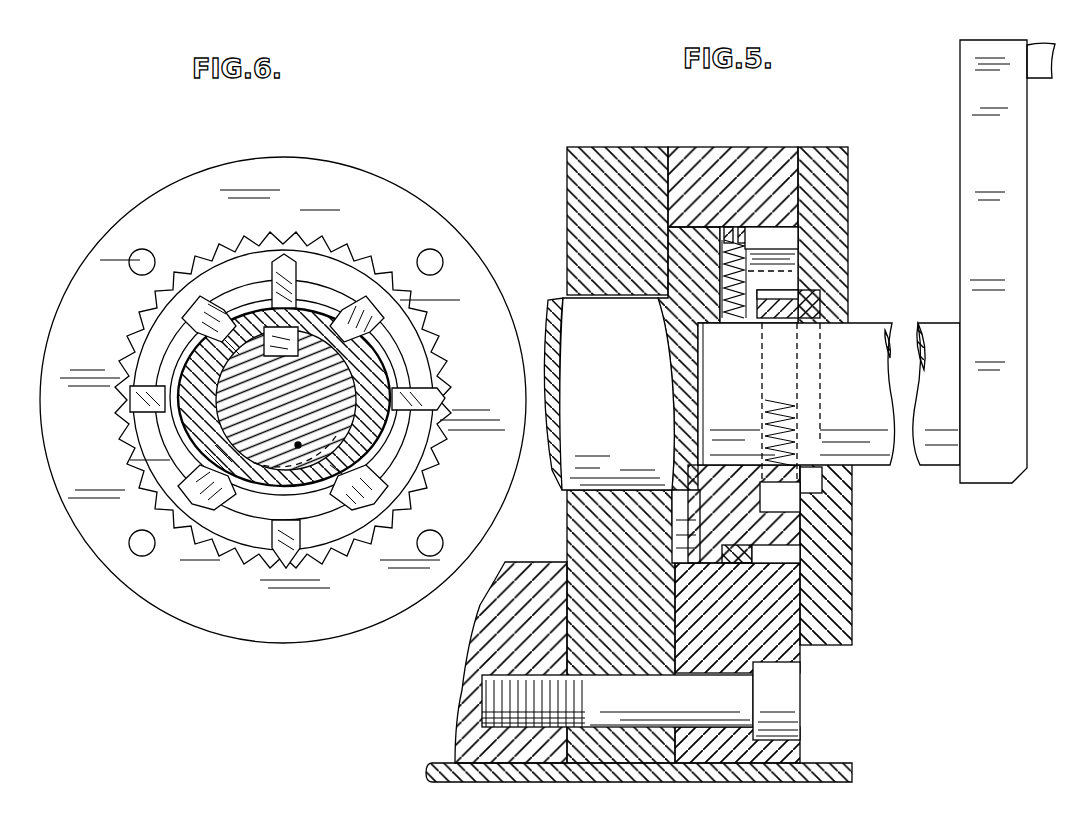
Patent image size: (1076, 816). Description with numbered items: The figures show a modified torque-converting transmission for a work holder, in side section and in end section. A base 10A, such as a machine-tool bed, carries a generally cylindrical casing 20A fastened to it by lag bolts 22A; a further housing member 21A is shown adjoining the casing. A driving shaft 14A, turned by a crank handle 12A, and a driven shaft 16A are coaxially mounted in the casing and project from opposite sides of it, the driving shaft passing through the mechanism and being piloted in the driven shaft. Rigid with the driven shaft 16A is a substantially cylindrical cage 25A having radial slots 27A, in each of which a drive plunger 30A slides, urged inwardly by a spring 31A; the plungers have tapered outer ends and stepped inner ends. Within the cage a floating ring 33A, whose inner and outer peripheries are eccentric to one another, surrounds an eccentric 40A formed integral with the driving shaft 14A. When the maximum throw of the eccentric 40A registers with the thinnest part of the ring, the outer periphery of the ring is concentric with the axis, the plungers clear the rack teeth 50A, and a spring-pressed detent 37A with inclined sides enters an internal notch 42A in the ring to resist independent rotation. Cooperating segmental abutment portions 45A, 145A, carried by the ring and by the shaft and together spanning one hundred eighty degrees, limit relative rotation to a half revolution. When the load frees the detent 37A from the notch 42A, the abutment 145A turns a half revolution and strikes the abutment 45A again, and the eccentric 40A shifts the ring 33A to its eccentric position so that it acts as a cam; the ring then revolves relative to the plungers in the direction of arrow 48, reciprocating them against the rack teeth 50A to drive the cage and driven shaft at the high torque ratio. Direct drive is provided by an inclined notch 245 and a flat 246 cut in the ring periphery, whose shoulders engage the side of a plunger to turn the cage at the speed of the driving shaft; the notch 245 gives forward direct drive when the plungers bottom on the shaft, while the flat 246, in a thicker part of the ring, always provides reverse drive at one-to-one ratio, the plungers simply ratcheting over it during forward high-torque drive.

In FIG. 5, the base 10A is at (850, 768).
In FIG. 5, the crank handle 12A is at (975, 72).
In FIG. 6, the driving shaft 14A is at (375, 375).
In FIG. 5, the driving shaft 14A is at (948, 332).
In FIG. 5, the driven shaft 16A is at (622, 430).
In FIG. 5, the casing 20A is at (608, 160).
In FIG. 5, the housing member 21A is at (700, 158).
In FIG. 5, the lag bolt 22A is at (790, 698).
In FIG. 6, the cage 25A is at (220, 285).
In FIG. 5, the cage 25A is at (815, 531).
In FIG. 6, the radial slot 27A is at (300, 335).
In FIG. 6, the drive plunger 30A is at (350, 300).
In FIG. 5, the drive plunger 30A is at (815, 290).
In FIG. 5, the spring 31A is at (745, 235).
In FIG. 6, the floating ring 33A is at (240, 500).
In FIG. 5, the floating ring 33A is at (805, 507).
In FIG. 6, the spring-pressed detent 37A is at (270, 330).
In FIG. 6, the eccentric 40A is at (318, 545).
In FIG. 6, the internal notch 42A is at (275, 505).
In FIG. 5, the internal notch 42A is at (805, 482).
In FIG. 6, the segmental abutment portion 45A is at (335, 300).
In FIG. 5, the segmental abutment portion 45A is at (850, 306).
In FIG. 6, the arrow 48 is at (284, 397).
In FIG. 6, the rack teeth 50A is at (420, 300).
In FIG. 5, the rack teeth 50A is at (770, 232).
In FIG. 6, the segmental abutment portion 145A is at (395, 425).
In FIG. 6, the inclined notch 245 is at (277, 250).
In FIG. 5, the inclined notch 245 is at (812, 240).
In FIG. 6, the flat 246 is at (215, 495).